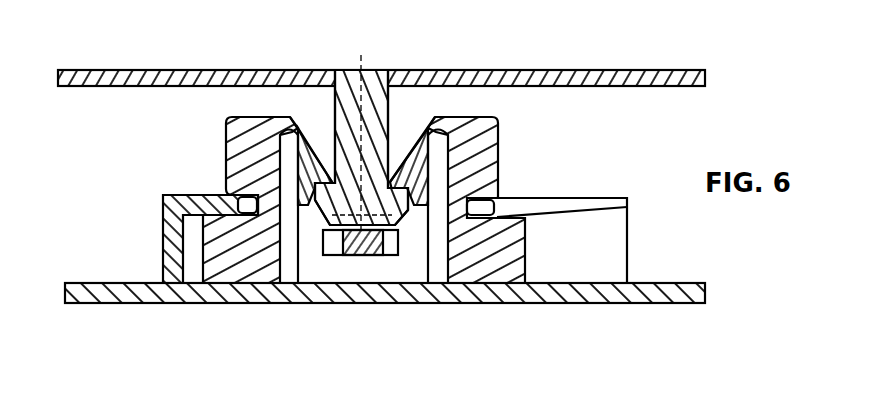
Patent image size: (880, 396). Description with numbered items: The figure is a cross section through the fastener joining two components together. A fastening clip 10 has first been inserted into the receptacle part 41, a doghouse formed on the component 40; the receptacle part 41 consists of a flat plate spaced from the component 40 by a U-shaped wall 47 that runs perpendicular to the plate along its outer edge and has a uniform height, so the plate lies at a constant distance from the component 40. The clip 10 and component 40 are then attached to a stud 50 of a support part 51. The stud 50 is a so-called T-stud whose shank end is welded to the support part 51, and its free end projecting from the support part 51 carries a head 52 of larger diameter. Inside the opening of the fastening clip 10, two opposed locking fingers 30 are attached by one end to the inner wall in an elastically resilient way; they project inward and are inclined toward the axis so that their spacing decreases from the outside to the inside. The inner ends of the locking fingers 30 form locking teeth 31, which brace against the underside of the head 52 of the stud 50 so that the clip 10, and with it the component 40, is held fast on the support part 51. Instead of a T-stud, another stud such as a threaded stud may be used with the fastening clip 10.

The fastening clip 10 is at (345, 200).
The locking fingers 30 is at (440, 158).
The locking teeth 31 is at (448, 180).
The component 40 is at (283, 293).
The receptacle part 41 is at (163, 225).
The U-shaped wall 47 is at (584, 252).
The stud 50 is at (333, 133).
The support part 51 is at (423, 76).
The head 52 is at (397, 220).